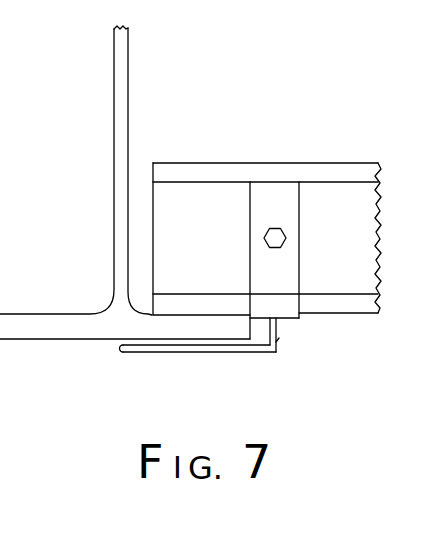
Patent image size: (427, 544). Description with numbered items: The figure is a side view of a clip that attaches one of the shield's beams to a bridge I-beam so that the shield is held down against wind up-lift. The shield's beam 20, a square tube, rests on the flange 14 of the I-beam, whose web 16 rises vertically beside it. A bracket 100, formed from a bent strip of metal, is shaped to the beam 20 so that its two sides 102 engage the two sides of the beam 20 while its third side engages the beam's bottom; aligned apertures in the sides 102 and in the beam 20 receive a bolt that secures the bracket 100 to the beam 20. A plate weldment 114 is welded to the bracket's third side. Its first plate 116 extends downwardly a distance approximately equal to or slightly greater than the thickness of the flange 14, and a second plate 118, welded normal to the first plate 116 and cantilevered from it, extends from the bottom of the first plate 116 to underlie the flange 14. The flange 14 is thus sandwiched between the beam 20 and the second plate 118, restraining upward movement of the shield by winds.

The flange 14 is at (191, 333).
The I-beam web 16 is at (128, 45).
The beam 20 is at (346, 168).
The bracket 100 is at (292, 322).
The side 102 is at (262, 207).
The plate weldment 114 is at (276, 352).
The first plate 116 is at (279, 338).
The second plate 118 is at (135, 352).